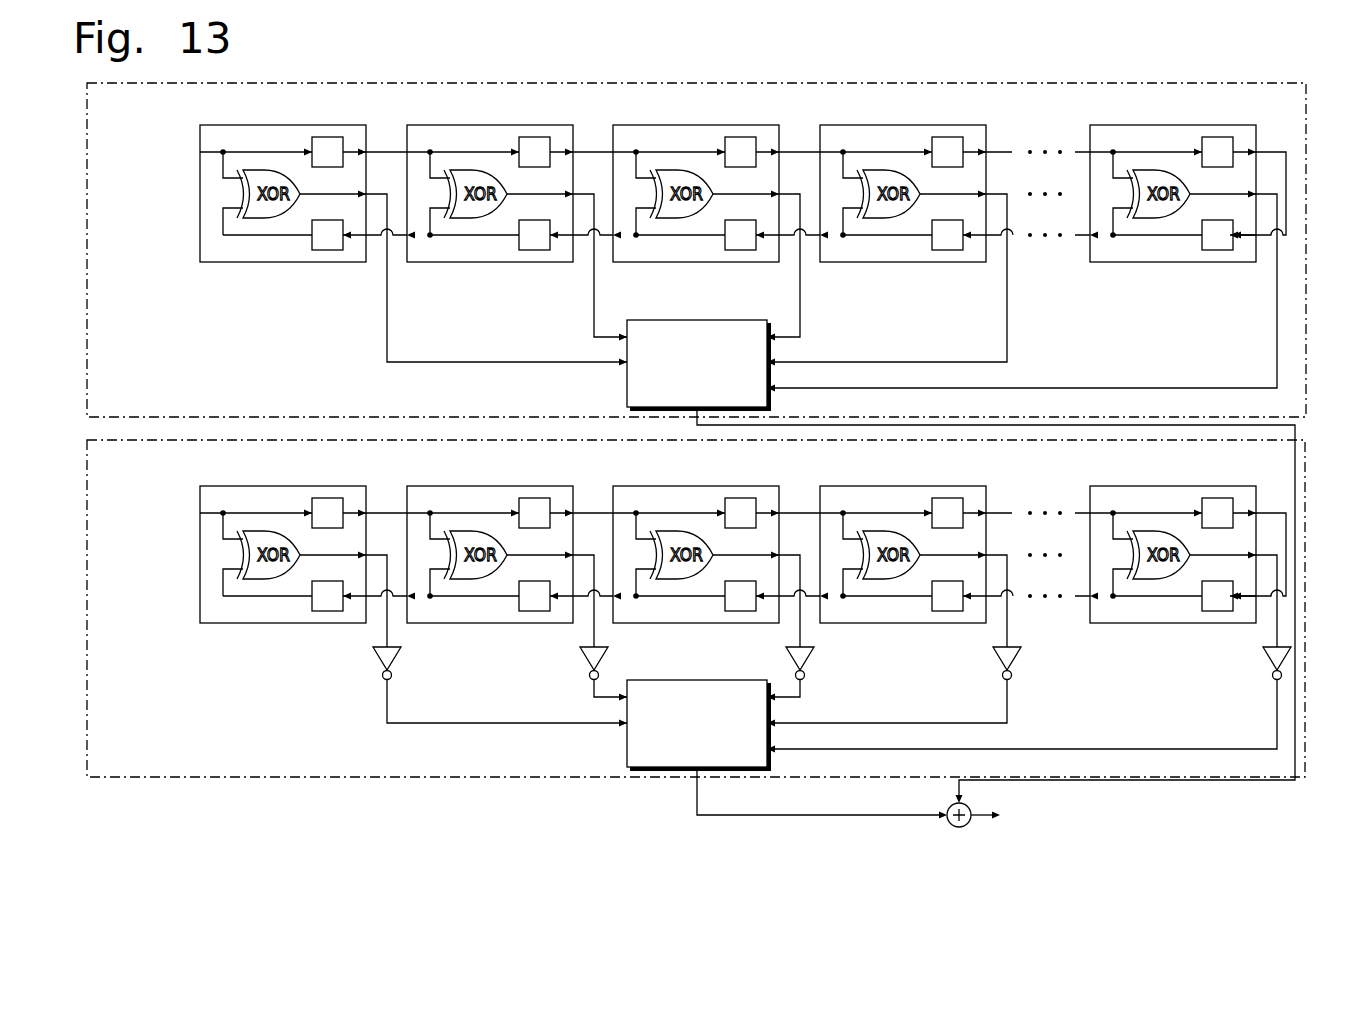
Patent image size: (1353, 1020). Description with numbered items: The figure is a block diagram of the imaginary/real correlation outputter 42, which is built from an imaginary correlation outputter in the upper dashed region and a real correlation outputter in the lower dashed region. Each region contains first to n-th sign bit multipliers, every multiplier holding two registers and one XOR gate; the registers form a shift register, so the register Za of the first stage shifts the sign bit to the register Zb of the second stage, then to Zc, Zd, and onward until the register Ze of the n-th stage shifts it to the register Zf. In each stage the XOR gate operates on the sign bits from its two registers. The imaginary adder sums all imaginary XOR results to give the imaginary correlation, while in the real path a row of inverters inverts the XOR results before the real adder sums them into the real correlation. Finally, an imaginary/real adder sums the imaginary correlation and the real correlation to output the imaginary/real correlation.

The imaginary/real correlation outputter 42 is at (1280, 45).